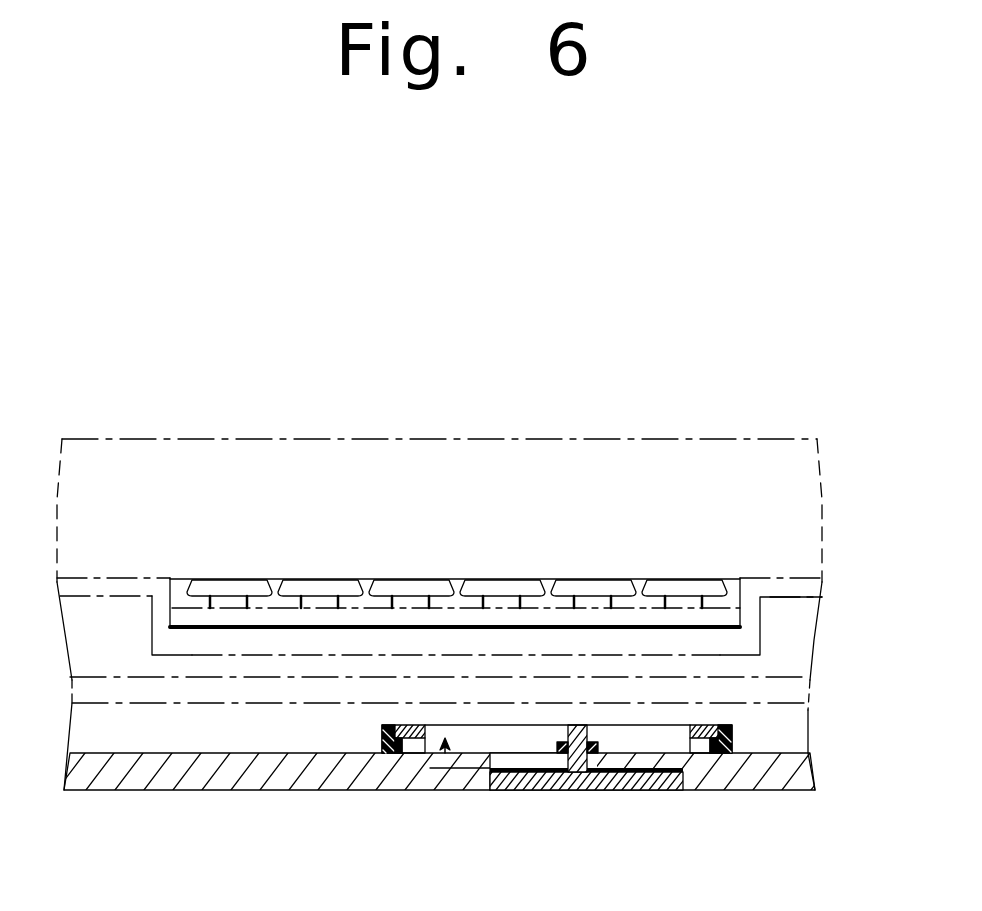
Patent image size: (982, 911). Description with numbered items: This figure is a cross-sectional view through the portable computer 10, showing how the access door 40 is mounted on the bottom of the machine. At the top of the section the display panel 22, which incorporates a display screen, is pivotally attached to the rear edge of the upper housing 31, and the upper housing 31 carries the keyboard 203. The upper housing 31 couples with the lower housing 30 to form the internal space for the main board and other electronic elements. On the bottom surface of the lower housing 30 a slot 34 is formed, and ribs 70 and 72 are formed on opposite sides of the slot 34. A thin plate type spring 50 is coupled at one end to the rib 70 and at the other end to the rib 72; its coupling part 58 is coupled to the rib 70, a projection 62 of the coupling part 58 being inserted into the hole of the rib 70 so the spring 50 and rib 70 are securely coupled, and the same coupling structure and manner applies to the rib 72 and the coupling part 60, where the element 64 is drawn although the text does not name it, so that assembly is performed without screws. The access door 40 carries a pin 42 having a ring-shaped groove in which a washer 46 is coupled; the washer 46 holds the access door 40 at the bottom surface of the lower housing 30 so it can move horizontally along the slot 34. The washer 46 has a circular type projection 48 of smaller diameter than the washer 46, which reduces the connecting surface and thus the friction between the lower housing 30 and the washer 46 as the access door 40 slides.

The portable computer 10 is at (250, 339).
The display panel 22 is at (594, 437).
The keyboard 203 is at (712, 583).
The upper housing 31 is at (798, 642).
The lower housing 30 is at (112, 778).
The slot 34 is at (492, 760).
The access door 40 is at (566, 778).
The pin 42 is at (580, 725).
The washer 46 is at (600, 748).
The circular type projection 48 is at (540, 772).
The spring 50 is at (443, 750).
The coupling part 58 is at (407, 723).
The coupling part 60 is at (732, 684).
The projection 62 is at (383, 740).
The right seal member 64 is at (732, 745).
The rib 70 is at (382, 732).
The rib 72 is at (725, 727).